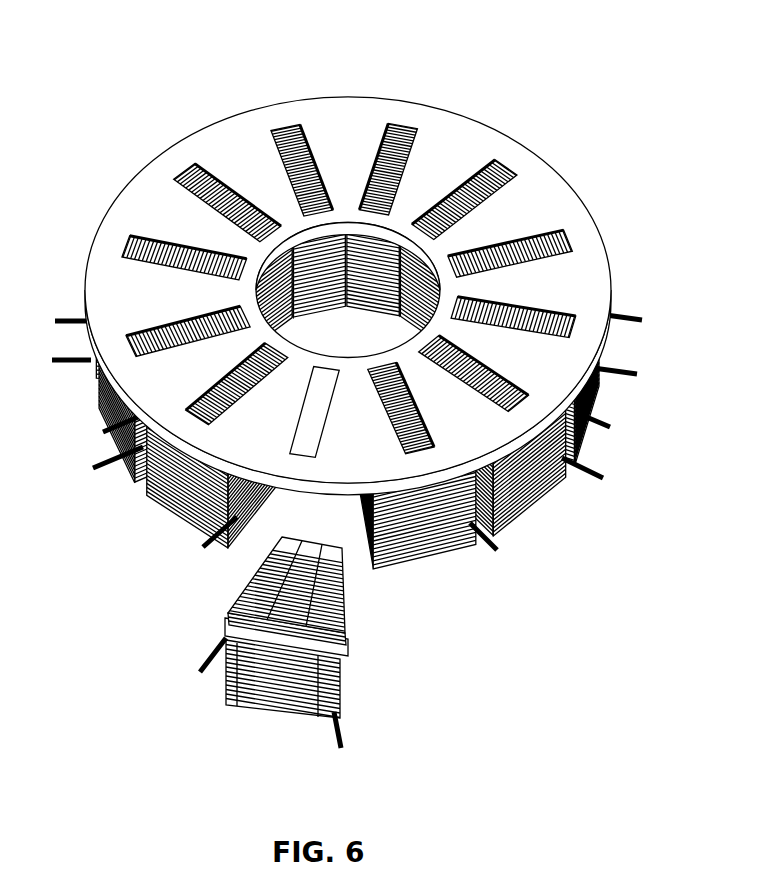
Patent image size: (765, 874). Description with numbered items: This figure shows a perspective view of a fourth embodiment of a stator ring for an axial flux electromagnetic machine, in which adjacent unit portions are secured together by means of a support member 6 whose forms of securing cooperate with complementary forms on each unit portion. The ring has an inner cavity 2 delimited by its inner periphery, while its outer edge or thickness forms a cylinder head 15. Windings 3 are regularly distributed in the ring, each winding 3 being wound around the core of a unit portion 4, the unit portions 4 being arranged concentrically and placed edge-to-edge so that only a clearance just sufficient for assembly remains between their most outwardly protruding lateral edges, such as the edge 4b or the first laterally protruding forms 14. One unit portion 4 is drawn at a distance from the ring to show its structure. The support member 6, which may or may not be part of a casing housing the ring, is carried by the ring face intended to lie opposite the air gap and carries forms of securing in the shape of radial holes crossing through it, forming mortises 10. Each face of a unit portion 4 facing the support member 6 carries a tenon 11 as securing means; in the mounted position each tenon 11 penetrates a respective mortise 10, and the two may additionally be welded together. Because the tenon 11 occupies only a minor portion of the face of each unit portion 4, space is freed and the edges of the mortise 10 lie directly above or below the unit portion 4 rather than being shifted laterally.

The inner cavity 2 is at (347, 329).
The winding 3 is at (180, 480).
The unit portion 4 is at (281, 662).
The edge 4b is at (343, 603).
The support member 6 is at (354, 336).
The mortise 10 is at (317, 413).
The tenon 11 is at (345, 643).
The first laterally protruding form 14 is at (243, 626).
The cylinder head 15 is at (282, 635).